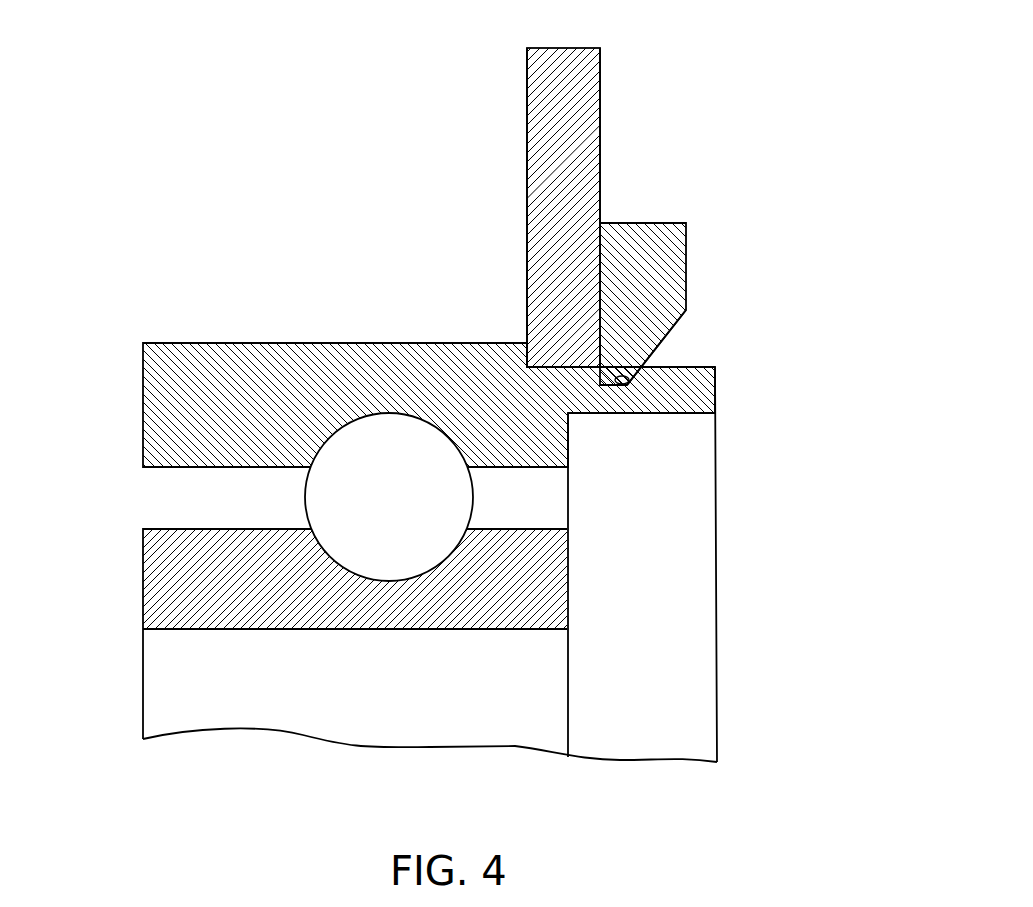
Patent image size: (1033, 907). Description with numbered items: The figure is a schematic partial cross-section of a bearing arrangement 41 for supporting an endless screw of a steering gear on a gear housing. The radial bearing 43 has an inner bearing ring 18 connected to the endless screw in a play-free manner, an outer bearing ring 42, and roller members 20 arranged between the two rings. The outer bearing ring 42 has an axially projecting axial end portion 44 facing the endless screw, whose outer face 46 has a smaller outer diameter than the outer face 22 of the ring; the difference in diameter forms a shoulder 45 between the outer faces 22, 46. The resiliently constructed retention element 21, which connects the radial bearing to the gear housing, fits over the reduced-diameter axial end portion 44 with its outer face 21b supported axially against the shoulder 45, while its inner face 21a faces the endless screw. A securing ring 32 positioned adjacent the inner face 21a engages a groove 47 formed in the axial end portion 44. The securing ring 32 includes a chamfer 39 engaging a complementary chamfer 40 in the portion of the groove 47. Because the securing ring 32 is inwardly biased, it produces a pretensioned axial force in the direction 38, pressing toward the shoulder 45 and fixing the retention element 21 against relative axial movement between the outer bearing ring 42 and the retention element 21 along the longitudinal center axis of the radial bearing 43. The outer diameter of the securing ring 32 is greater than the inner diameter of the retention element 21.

The inner bearing ring 18 is at (163, 568).
The roller members 20 is at (327, 504).
The retention element 21 is at (600, 83).
The inner face of the retention element 21a is at (600, 137).
The outer face of the retention element 21b is at (527, 172).
The outer face of the outer bearing ring 22 is at (352, 343).
The securing ring 32 is at (646, 243).
The direction 38 is at (722, 262).
The chamfer 39 is at (668, 331).
The chamfer 40 is at (630, 387).
The bearing arrangement 41 is at (297, 296).
The outer bearing ring 42 is at (172, 423).
The radial bearing 43 is at (263, 336).
The axial end portion 44 is at (703, 400).
The shoulder 45 is at (537, 352).
The outer face of the axial end portion 46 is at (700, 366).
The groove 47 is at (616, 377).